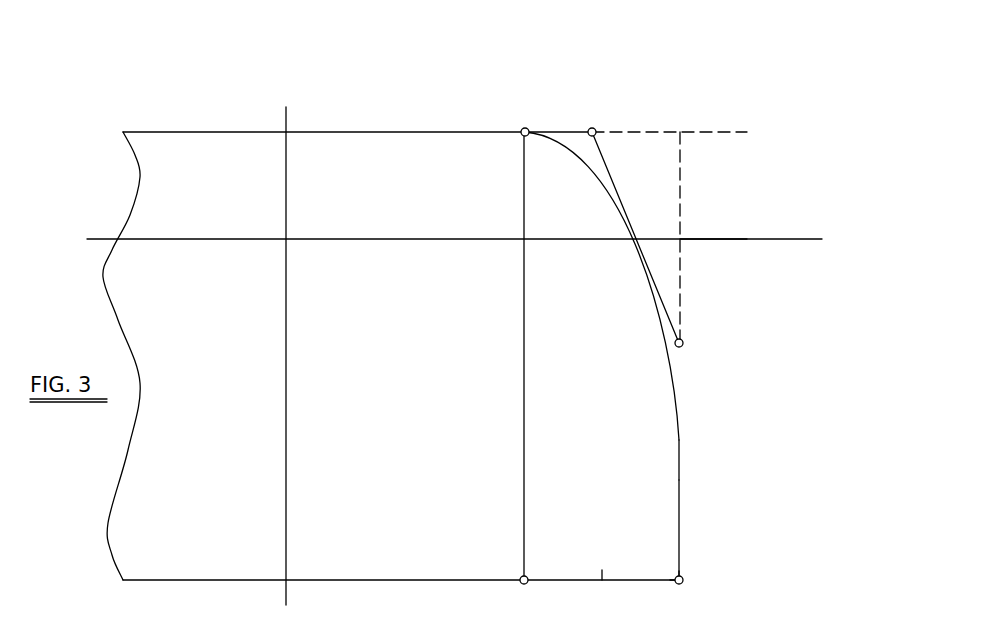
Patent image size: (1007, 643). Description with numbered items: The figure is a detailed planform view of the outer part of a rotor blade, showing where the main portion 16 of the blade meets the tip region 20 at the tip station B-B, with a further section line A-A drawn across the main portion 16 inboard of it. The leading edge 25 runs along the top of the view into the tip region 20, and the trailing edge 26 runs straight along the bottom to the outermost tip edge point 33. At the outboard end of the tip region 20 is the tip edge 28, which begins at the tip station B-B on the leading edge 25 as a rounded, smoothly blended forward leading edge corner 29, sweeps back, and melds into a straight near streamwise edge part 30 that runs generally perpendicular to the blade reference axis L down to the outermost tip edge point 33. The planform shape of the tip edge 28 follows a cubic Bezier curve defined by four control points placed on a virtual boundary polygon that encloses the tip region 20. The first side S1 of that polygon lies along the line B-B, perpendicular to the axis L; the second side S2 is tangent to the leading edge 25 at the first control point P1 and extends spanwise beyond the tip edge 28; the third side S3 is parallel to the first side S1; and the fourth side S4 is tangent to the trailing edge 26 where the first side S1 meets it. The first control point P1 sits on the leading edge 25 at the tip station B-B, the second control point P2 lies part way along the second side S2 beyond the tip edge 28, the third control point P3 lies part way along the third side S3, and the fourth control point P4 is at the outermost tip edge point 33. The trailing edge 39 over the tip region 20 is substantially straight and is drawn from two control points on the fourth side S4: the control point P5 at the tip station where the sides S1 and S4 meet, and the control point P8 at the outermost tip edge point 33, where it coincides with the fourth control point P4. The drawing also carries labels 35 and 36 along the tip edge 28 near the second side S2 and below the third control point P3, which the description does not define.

The main portion 16 is at (246, 356).
The tip region 20 is at (566, 64).
The leading edge 25 is at (323, 132).
The trailing edge 26 is at (190, 580).
The tip edge 28 is at (655, 313).
The forward leading edge corner 29 is at (583, 172).
The near streamwise edge part 30 is at (678, 515).
The outermost tip edge point 33 is at (681, 582).
The top edge segment 35 is at (568, 131).
The side edge 36 is at (680, 388).
The trailing edge over the tip region 39 is at (583, 580).
The first control point P1 is at (525, 128).
The second control point P2 is at (596, 134).
The third control point P3 is at (683, 343).
The fourth control point P4 is at (683, 580).
The control point P5 is at (525, 577).
The control point P8 is at (681, 577).
The first side of boundary polygon S1 is at (524, 412).
The second side of boundary polygon S2 is at (673, 132).
The third side of boundary polygon S3 is at (683, 241).
The fourth side of boundary polygon S4 is at (602, 578).
The blade reference axis L is at (808, 239).
The section A- A is at (286, 107).
The tip station B- B is at (525, 128).